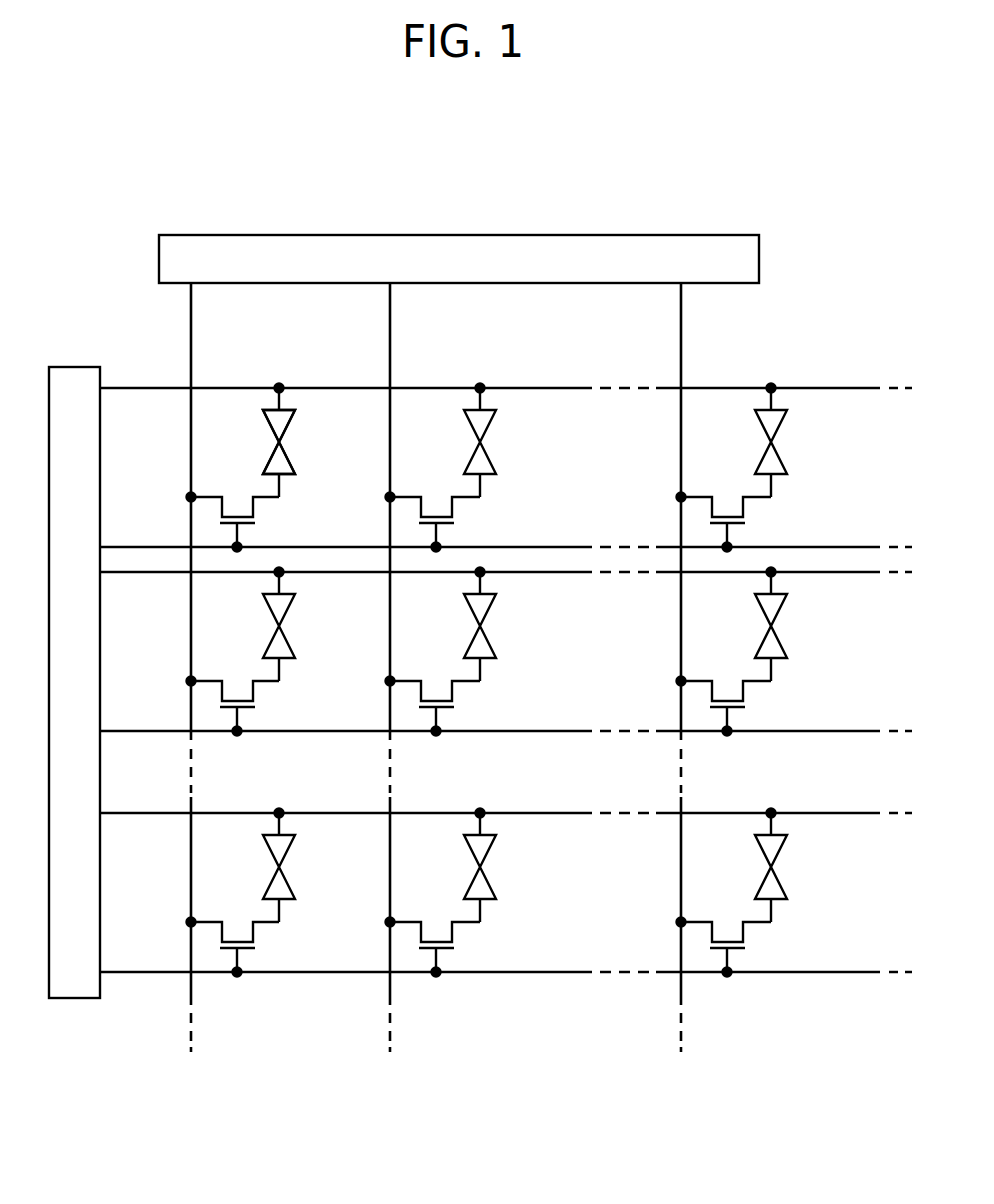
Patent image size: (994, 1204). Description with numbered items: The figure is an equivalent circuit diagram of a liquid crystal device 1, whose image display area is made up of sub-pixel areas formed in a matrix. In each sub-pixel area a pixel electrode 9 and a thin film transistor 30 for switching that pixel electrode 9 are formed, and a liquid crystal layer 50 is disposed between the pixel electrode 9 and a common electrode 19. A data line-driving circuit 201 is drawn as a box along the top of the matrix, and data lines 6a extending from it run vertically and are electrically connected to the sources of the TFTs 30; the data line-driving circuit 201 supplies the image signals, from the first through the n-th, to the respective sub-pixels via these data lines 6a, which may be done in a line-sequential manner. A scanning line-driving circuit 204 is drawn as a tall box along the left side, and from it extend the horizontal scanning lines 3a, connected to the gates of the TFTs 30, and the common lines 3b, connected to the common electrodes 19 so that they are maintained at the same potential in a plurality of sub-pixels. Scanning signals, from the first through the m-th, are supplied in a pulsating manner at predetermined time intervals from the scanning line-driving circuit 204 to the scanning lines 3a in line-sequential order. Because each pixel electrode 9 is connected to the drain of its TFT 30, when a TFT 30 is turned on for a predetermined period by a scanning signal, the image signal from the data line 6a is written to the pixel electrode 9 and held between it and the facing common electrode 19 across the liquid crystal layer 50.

The liquid crystal device 1 is at (866, 356).
The scanning line 3a is at (170, 546).
The common line 3b is at (132, 387).
The data line 6a is at (191, 352).
The pixel electrode 9 is at (281, 485).
The common electrode 19 is at (281, 399).
The thin film transistor 30 is at (266, 527).
The liquid crystal layer 50 is at (242, 440).
The data line-driving circuit 201 is at (760, 250).
The scanning line-driving circuit 204 is at (82, 366).